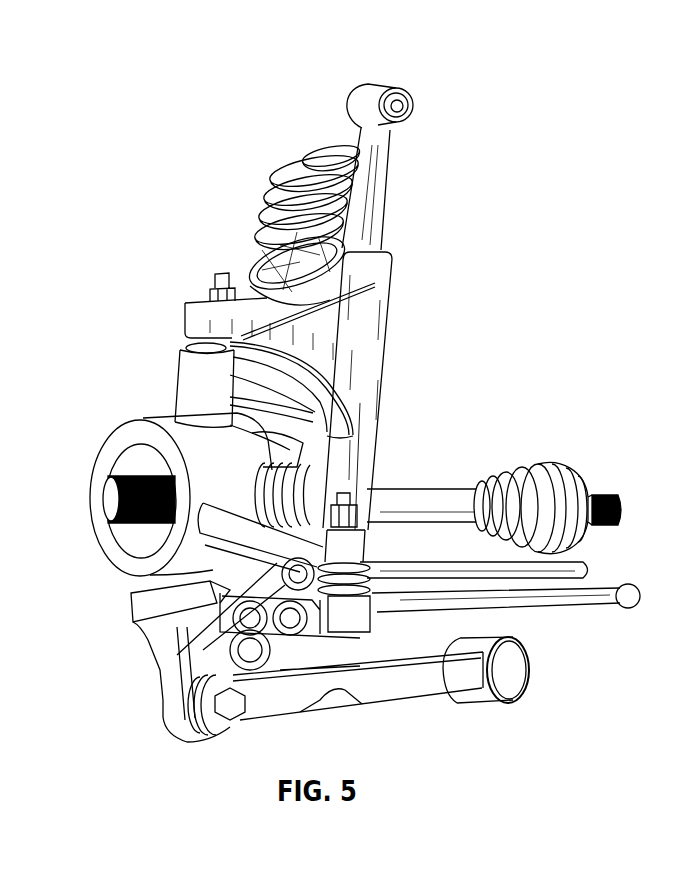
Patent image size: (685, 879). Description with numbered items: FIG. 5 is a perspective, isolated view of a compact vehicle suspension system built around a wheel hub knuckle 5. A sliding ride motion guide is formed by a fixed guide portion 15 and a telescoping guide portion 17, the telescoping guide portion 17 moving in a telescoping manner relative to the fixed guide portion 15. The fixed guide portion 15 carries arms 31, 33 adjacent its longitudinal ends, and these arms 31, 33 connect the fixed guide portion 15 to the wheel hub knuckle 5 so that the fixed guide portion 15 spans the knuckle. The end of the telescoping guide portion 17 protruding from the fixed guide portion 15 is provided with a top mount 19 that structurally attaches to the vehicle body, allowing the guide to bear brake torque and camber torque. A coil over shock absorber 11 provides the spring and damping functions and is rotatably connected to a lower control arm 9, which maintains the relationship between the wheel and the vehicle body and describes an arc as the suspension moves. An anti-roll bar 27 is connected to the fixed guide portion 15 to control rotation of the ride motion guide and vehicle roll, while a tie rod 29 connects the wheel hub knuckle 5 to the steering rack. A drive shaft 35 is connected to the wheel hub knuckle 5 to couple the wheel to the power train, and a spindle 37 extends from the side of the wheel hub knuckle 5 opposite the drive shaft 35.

The wheel hub knuckle 5 is at (200, 507).
The lower control arm 9 is at (415, 688).
The coil over shock absorber 11 is at (275, 183).
The fixed guide portion 15 is at (385, 295).
The telescoping guide portion 17 is at (393, 172).
The top mount 19 is at (411, 98).
The anti-roll bar 27 is at (583, 557).
The tie rod 29 is at (593, 613).
The arm 31 is at (190, 310).
The arm 33 is at (220, 605).
The drive shaft 35 is at (433, 497).
The spindle 37 is at (113, 553).